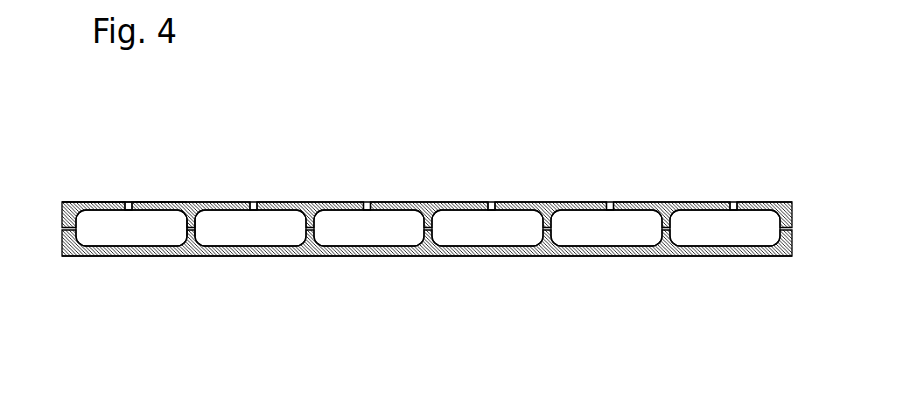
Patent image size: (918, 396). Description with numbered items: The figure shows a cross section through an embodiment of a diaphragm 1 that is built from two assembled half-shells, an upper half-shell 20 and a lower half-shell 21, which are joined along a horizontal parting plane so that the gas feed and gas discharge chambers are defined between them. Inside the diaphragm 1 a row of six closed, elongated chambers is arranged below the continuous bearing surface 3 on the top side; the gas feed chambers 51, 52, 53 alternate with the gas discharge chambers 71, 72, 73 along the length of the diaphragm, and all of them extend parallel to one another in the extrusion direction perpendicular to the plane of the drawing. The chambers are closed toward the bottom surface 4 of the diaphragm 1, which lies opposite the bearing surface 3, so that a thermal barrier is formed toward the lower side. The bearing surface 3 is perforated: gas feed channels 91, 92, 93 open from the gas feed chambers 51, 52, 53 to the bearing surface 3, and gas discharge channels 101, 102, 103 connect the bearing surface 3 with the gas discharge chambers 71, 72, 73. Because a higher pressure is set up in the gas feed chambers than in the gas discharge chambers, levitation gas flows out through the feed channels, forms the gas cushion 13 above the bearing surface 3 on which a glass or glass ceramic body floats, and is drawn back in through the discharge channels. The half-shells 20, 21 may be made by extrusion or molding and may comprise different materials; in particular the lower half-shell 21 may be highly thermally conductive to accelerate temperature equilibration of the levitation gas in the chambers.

The diaphragm 1 is at (780, 151).
The continuous bearing surface 3 is at (147, 203).
The bottom surface 4 is at (193, 255).
The gas cushion 13 is at (97, 191).
The upper half-shell 20 is at (793, 210).
The lower half-shell 21 is at (793, 242).
The gas feed chamber 51 is at (123, 244).
The gas feed chamber 52 is at (363, 243).
The gas feed chamber 53 is at (582, 243).
The gas discharge chamber 71 is at (245, 244).
The gas discharge chamber 72 is at (483, 243).
The gas discharge chamber 73 is at (705, 243).
The gas feed channel 91 is at (126, 202).
The gas feed channel 92 is at (368, 202).
The gas feed channel 93 is at (610, 202).
The gas discharge channel 101 is at (252, 202).
The gas discharge channel 102 is at (491, 202).
The gas discharge channel 103 is at (733, 202).